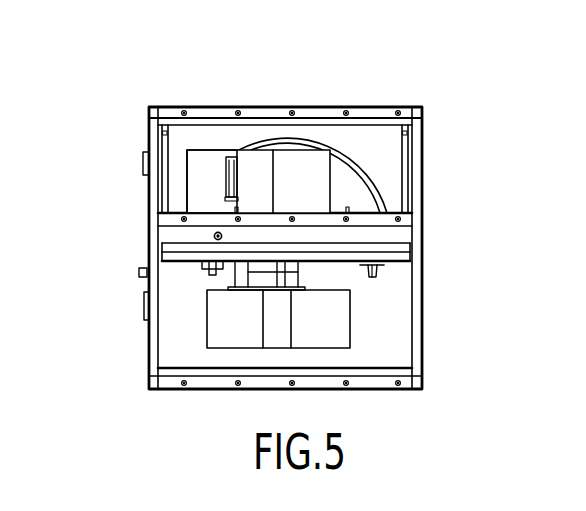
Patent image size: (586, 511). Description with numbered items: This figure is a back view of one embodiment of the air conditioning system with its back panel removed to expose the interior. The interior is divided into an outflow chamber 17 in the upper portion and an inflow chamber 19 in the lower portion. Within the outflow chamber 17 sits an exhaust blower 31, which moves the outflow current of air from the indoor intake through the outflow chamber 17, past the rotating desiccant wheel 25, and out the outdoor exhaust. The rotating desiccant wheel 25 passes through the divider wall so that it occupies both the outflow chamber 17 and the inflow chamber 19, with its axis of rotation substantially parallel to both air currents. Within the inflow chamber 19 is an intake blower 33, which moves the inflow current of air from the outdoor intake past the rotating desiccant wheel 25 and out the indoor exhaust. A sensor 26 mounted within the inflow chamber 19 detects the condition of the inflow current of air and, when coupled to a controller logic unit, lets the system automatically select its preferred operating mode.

The outflow chamber 17 is at (371, 137).
The inflow chamber 19 is at (190, 285).
The rotating desiccant wheel 25 is at (360, 198).
The sensor 26 is at (375, 277).
The exhaust blower 31 is at (210, 167).
The intake blower 33 is at (220, 333).